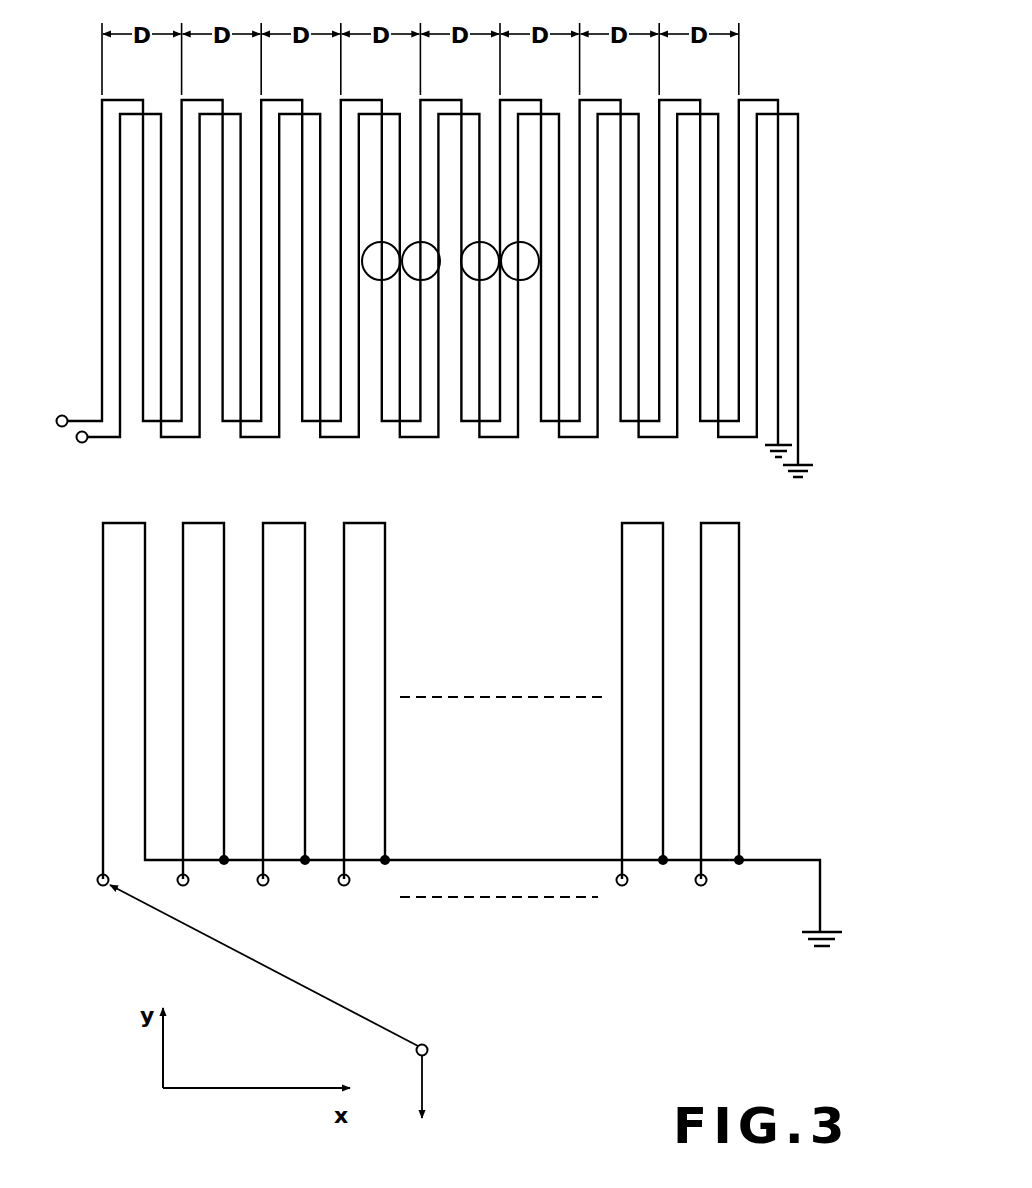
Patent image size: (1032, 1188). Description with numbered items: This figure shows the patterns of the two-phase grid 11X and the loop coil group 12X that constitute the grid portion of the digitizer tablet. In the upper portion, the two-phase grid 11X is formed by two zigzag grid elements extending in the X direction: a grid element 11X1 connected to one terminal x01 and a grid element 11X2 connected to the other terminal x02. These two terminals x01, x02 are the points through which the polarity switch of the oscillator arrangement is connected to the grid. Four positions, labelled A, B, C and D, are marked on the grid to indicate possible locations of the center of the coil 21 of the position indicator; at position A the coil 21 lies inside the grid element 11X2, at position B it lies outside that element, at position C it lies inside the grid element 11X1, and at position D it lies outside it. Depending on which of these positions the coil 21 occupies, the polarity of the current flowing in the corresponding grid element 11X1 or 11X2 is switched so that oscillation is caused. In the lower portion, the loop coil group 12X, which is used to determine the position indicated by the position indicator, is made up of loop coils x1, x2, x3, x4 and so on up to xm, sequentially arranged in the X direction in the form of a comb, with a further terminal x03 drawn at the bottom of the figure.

The two-phase grid 11X is at (486, 250).
The grid element 11X1 is at (757, 100).
The grid element 11X2 is at (799, 155).
The loop coil group 12X is at (665, 600).
The coil 21 is at (388, 243).
The terminal x01 is at (62, 415).
The terminal x02 is at (83, 443).
The terminal x03 is at (280, 1019).
The loop coil x1 is at (110, 903).
The loop coil x2 is at (183, 898).
The loop coil x3 is at (271, 898).
The loop coil x4 is at (347, 898).
The loop coil xm is at (671, 899).